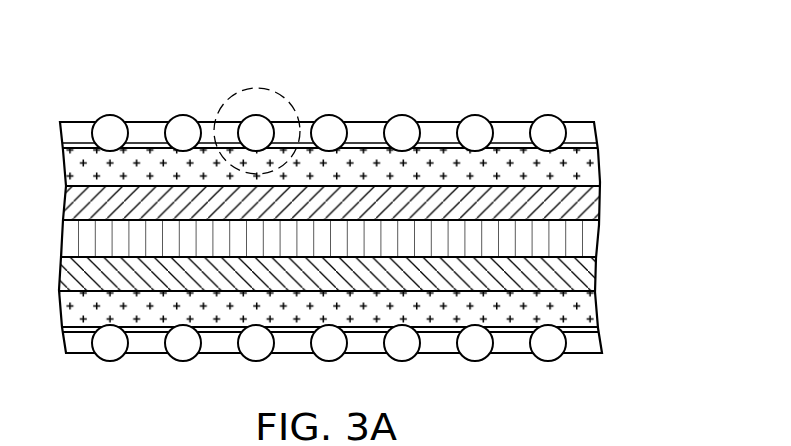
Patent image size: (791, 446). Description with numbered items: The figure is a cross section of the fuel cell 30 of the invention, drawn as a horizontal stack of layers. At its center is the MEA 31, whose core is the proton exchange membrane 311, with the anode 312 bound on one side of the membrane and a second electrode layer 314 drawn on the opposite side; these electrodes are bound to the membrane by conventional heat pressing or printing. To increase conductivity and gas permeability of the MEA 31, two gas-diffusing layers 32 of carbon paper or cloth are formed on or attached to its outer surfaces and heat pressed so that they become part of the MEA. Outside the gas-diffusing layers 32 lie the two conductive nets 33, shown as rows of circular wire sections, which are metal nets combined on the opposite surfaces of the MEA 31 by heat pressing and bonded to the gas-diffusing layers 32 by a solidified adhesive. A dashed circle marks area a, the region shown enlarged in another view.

The fuel cell 30 is at (84, 73).
The MEA 31 is at (387, 238).
The proton exchange membrane 311 is at (583, 243).
The anode 312 is at (585, 208).
The lower bonding layer 314 is at (583, 278).
The gas-diffusing layer 32 is at (584, 169).
The conductive net 33 is at (563, 133).
The area a is at (256, 88).